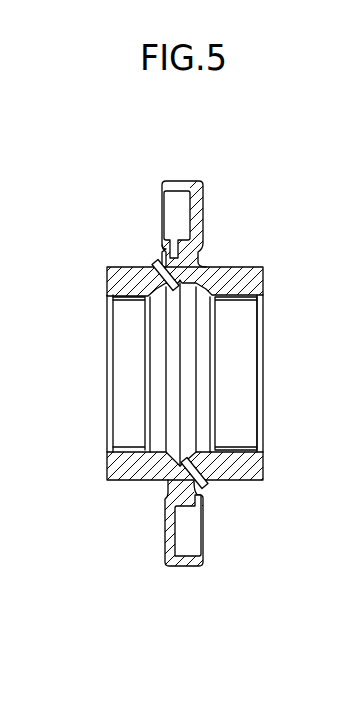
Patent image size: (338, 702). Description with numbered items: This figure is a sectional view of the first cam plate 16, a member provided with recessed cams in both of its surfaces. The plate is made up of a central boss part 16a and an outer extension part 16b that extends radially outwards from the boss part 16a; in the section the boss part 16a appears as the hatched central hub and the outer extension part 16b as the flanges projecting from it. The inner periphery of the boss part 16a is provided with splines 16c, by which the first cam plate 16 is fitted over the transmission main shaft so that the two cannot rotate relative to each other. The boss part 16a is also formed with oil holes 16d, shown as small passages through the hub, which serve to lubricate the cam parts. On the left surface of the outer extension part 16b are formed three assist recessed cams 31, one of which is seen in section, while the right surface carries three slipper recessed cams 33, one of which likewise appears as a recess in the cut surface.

The first cam plate 16 is at (87, 132).
The boss part 16a is at (232, 280).
The outer extension part 16b is at (205, 218).
The splines 16c is at (232, 298).
The oil holes 16d is at (166, 270).
The assist recessed cams 31 is at (175, 212).
The slipper recessed cams 33 is at (190, 532).